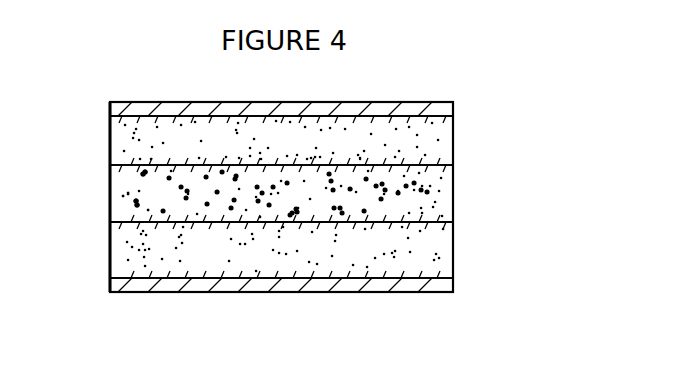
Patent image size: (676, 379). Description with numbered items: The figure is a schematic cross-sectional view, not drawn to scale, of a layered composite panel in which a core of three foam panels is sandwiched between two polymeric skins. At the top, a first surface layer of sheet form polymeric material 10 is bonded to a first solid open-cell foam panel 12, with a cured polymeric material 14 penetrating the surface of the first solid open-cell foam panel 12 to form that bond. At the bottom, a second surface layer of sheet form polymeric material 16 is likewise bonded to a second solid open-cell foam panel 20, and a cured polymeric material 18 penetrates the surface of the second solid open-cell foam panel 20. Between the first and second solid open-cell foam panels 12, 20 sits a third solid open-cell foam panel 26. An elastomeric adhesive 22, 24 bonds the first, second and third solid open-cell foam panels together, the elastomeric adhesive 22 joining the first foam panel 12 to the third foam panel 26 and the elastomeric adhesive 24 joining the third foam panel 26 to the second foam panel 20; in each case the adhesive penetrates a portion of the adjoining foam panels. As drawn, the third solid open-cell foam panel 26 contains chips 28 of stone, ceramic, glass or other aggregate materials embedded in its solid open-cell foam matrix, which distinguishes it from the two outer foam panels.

The first surface layer of sheet form polymeric material 10 is at (365, 101).
The first solid open-cell foam panel 12 is at (440, 135).
The cured polymeric material 14 is at (453, 118).
The second surface layer of sheet form polymeric material 16 is at (370, 293).
The cured polymeric material 18 is at (455, 275).
The second solid open-cell foam panel 20 is at (440, 248).
The elastomeric adhesive 22 is at (462, 170).
The elastomeric adhesive 24 is at (458, 222).
The third solid open-cell foam panel 26 is at (127, 212).
The chips 28 is at (122, 208).